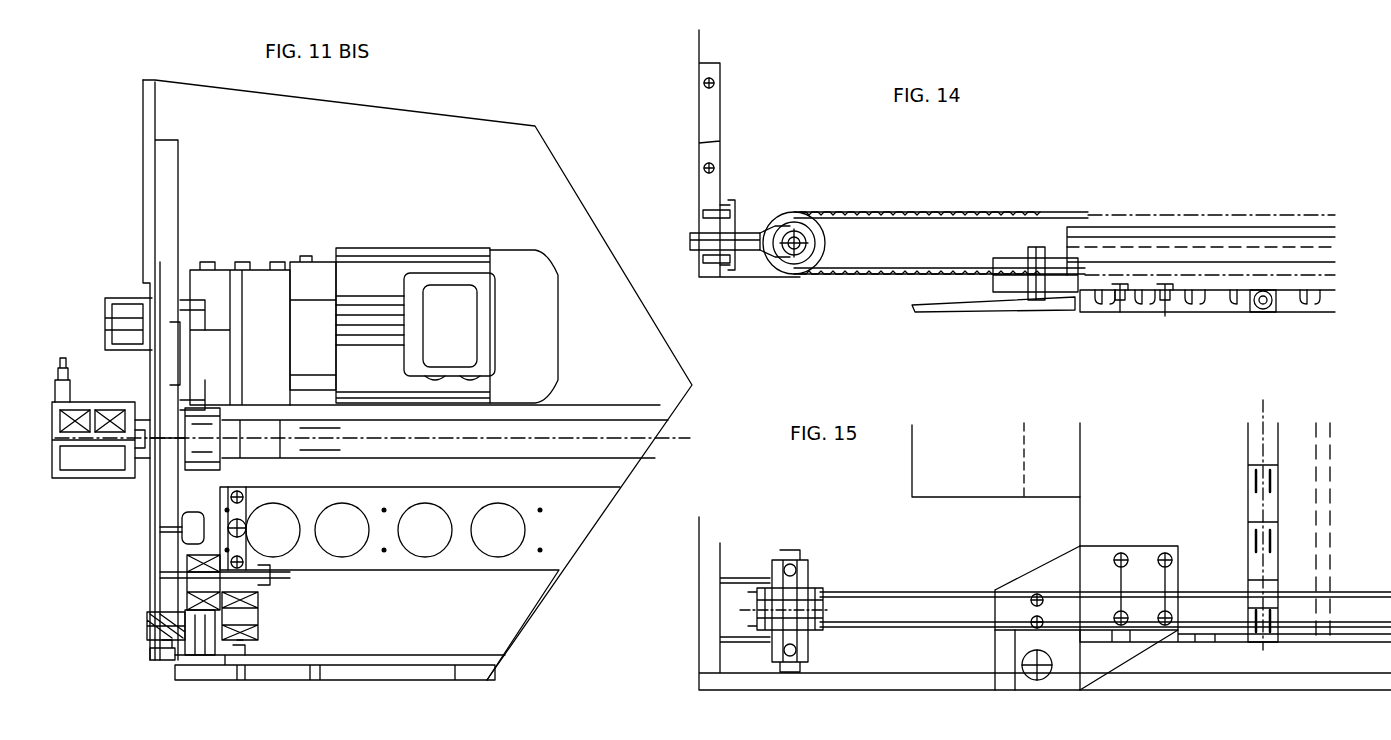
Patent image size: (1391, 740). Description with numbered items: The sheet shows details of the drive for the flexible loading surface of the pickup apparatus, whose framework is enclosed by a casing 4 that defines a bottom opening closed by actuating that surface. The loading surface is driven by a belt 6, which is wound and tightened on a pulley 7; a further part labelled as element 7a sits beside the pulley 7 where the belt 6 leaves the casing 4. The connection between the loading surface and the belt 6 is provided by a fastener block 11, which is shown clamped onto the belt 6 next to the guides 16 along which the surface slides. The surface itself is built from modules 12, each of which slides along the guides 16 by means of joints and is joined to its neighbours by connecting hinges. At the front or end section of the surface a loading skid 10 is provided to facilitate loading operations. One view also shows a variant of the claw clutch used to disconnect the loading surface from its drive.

In FIG. 14, the casing 4 is at (699, 43).
In FIG. 15, the casing 4 is at (838, 690).
In FIG. 14, the belt 6 is at (890, 225).
In FIG. 15, the belt 6 is at (935, 590).
In FIG. 14, the pulley 7 is at (782, 248).
In FIG. 15, the pulley 7 is at (815, 592).
In FIG. 14, the belt tensioning bracket 7a is at (737, 232).
In FIG. 15, the loading skid 10 is at (990, 460).
In FIG. 14, the fastener block 11 is at (1005, 258).
In FIG. 15, the fastener block 11 is at (1000, 565).
In FIG. 15, the module 12 is at (1160, 487).
In FIG. 14, the guide 16 is at (1180, 227).